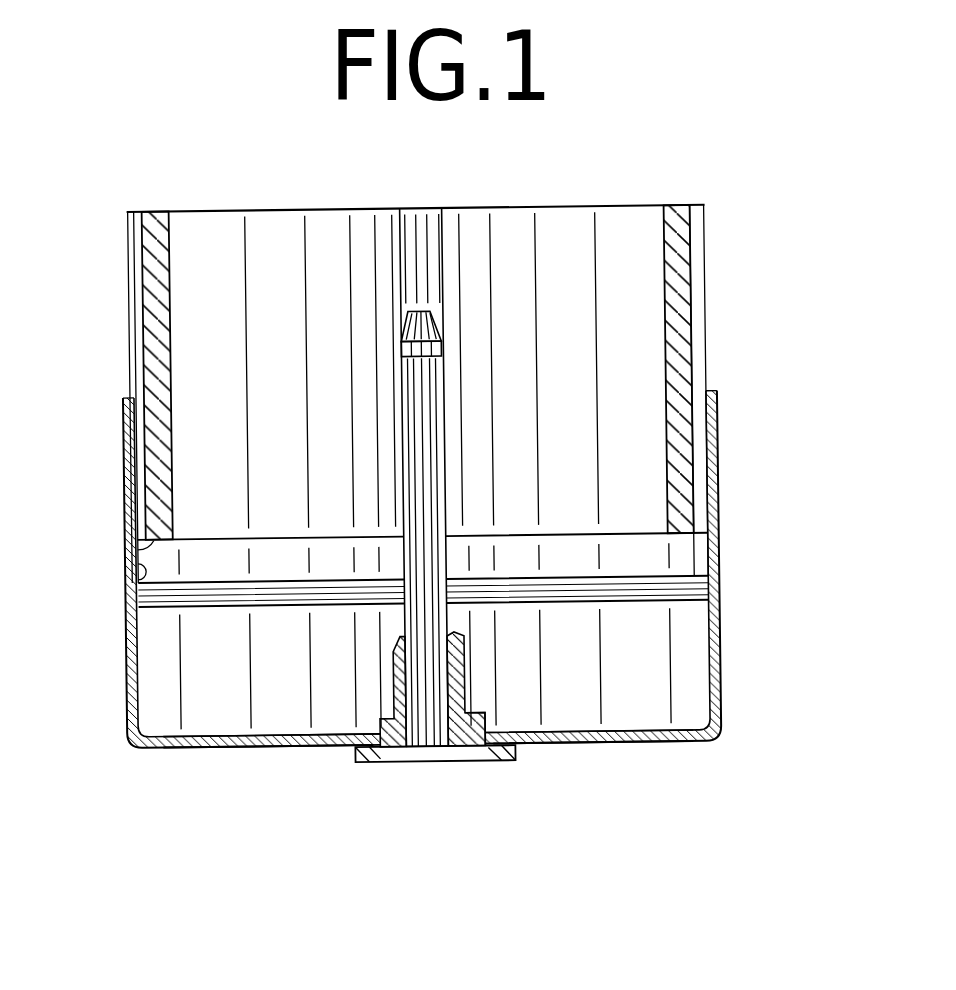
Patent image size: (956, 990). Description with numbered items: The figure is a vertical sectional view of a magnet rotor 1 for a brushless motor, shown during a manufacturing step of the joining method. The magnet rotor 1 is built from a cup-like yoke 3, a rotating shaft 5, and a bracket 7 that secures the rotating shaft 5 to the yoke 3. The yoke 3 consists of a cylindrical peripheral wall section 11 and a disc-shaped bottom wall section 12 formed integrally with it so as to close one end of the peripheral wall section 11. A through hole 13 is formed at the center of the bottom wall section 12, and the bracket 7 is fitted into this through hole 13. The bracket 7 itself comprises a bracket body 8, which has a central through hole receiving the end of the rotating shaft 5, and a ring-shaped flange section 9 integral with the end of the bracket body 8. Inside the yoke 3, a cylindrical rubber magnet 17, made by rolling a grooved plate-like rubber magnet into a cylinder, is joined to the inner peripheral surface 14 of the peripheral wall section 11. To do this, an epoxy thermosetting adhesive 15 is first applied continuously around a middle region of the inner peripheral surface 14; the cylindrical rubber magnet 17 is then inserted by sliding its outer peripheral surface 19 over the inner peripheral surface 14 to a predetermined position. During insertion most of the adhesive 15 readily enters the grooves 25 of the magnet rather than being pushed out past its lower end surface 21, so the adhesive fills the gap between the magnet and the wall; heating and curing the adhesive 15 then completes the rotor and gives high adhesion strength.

The magnet rotor 1 is at (733, 397).
The yoke 3 is at (637, 744).
The rotating shaft 5 is at (445, 432).
The bracket 7 is at (356, 766).
The bracket body 8 is at (460, 742).
The flange section 9 is at (366, 768).
The peripheral wall section 11 is at (716, 456).
The bottom wall section 12 is at (571, 744).
The through hole 13 is at (470, 745).
The inner peripheral surface 14 is at (136, 589).
The adhesive 15 is at (710, 591).
The cylindrical rubber magnet 17 is at (208, 285).
The outer peripheral surface 19 is at (131, 344).
The lower end surface 21 is at (158, 543).
The grooves 25 is at (136, 288).